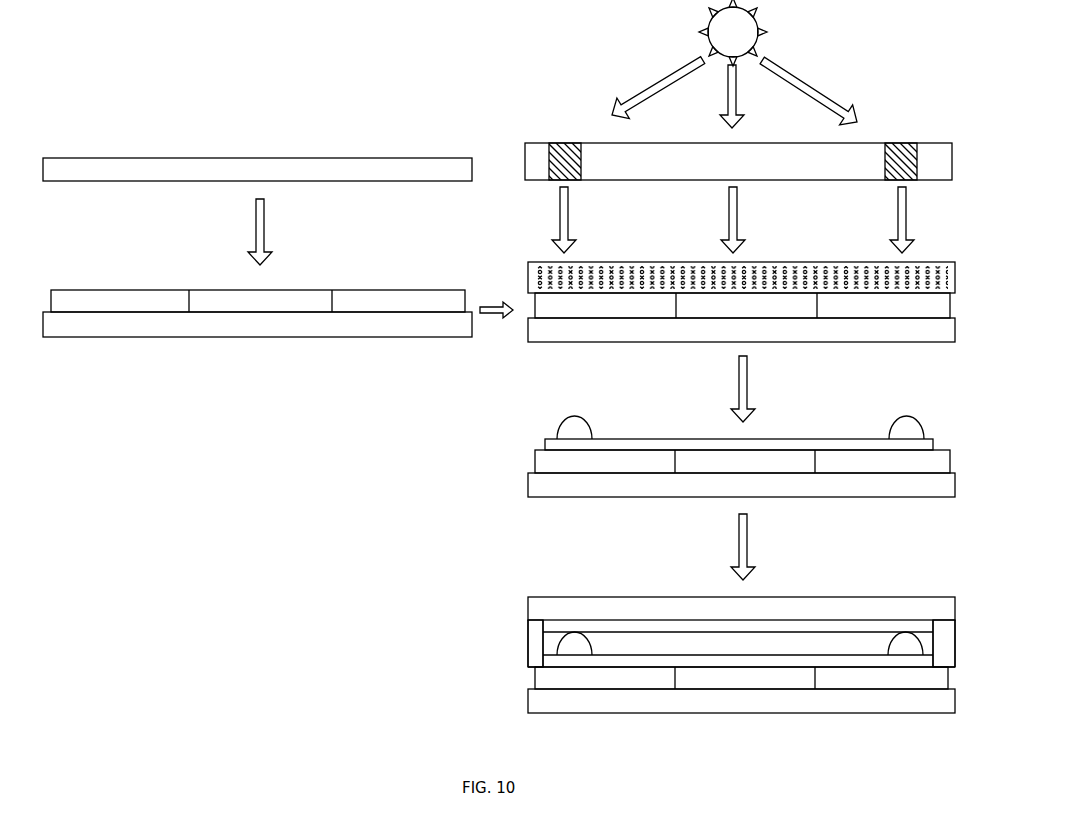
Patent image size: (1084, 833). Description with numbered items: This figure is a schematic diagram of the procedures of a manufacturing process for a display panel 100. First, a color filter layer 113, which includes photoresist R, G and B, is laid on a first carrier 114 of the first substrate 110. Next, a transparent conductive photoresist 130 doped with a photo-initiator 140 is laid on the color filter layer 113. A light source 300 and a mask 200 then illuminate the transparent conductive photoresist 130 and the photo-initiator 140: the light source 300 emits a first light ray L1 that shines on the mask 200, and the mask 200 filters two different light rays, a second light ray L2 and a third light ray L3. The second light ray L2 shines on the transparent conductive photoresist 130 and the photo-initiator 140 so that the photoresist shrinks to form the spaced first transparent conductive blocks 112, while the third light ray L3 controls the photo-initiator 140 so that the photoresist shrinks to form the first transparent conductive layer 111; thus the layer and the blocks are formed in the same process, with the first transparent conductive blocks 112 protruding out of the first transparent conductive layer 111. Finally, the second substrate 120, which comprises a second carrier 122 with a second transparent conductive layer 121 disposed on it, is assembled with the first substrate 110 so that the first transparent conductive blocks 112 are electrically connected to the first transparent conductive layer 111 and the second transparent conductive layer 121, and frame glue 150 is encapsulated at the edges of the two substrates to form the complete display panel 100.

The display panel 100 is at (478, 652).
The first substrate 110 is at (528, 440).
The first transparent conductive layer 111 is at (690, 439).
The first transparent conductive blocks 112 is at (566, 420).
The color filter layer 113 is at (173, 290).
The first carrier 114 is at (181, 158).
The second substrate 120 is at (520, 610).
The second transparent conductive layer 121 is at (672, 620).
The second carrier 122 is at (813, 598).
The transparent conductive photoresist 130 is at (532, 258).
The photo-initiator 140 is at (532, 279).
The frame glue 150 is at (537, 628).
The mask 200 is at (930, 143).
The light source 300 is at (776, 36).
The first light ray L1 is at (808, 80).
The second light ray L2 is at (570, 220).
The third light ray L3 is at (738, 220).